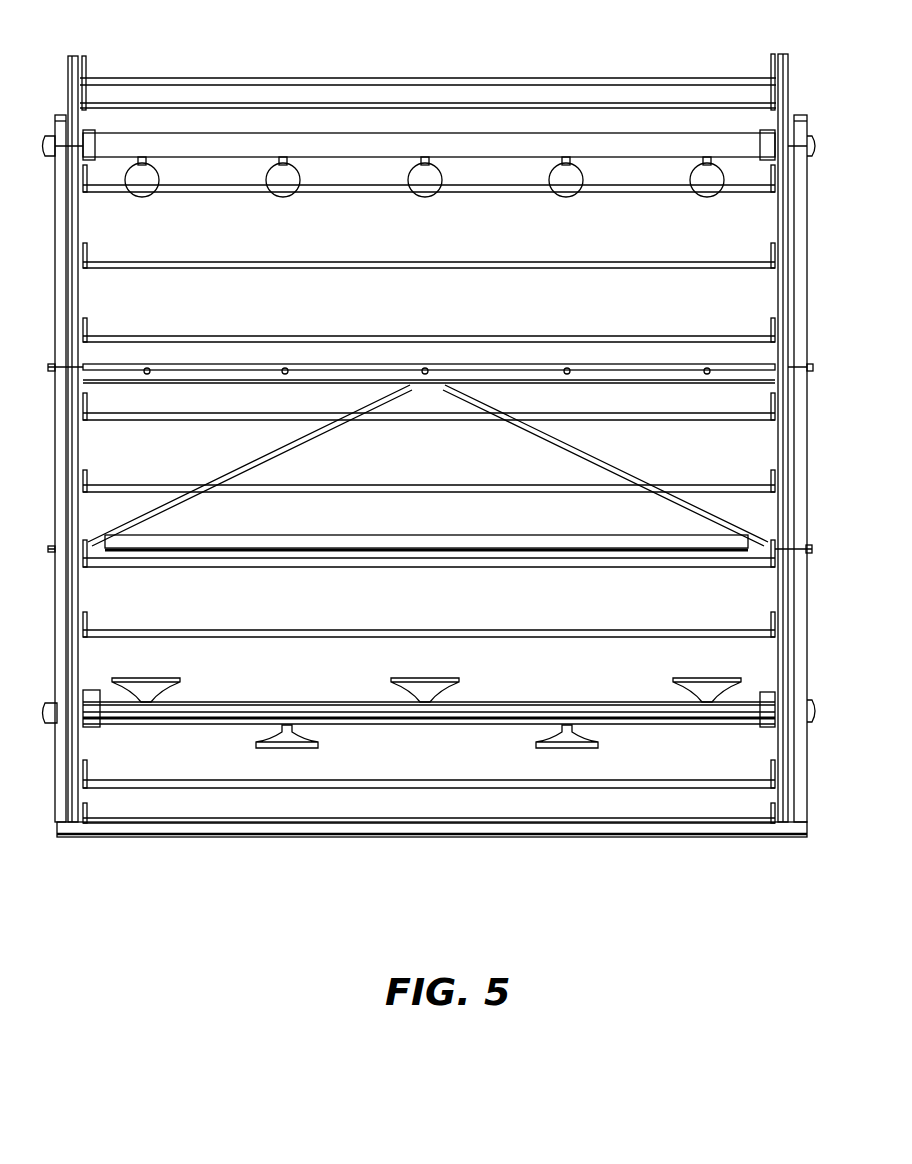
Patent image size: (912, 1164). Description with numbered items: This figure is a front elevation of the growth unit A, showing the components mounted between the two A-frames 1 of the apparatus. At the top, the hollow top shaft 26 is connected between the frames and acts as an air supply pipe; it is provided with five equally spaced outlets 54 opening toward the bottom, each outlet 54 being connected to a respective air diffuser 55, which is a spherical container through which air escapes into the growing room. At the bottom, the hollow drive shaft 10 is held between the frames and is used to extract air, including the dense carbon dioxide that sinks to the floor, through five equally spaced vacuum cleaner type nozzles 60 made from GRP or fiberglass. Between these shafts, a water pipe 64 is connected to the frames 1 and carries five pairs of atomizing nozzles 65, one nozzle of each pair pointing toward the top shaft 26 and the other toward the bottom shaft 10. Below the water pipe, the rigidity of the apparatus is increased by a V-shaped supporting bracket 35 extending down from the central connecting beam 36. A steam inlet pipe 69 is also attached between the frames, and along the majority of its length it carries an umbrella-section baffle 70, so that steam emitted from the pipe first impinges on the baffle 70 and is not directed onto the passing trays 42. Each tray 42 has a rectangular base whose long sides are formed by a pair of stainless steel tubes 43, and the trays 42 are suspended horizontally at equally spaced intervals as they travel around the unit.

The growth unit A is at (553, 70).
The A-frame 1 is at (62, 272).
The hollow drive shaft 10 is at (575, 710).
The top shaft 26 is at (385, 145).
The V-shaped supporting bracket 35 is at (275, 453).
The central connecting beam 36 is at (255, 384).
The tray 42 is at (404, 276).
The stainless steel tube 43 is at (257, 266).
The outlet 54 is at (700, 162).
The air diffuser 55 is at (150, 198).
The vacuum cleaner type nozzle 60 is at (460, 686).
The water pipe 64 is at (503, 368).
The atomizing nozzle 65 is at (425, 368).
The steam inlet pipe 69 is at (810, 557).
The baffle 70 is at (450, 545).